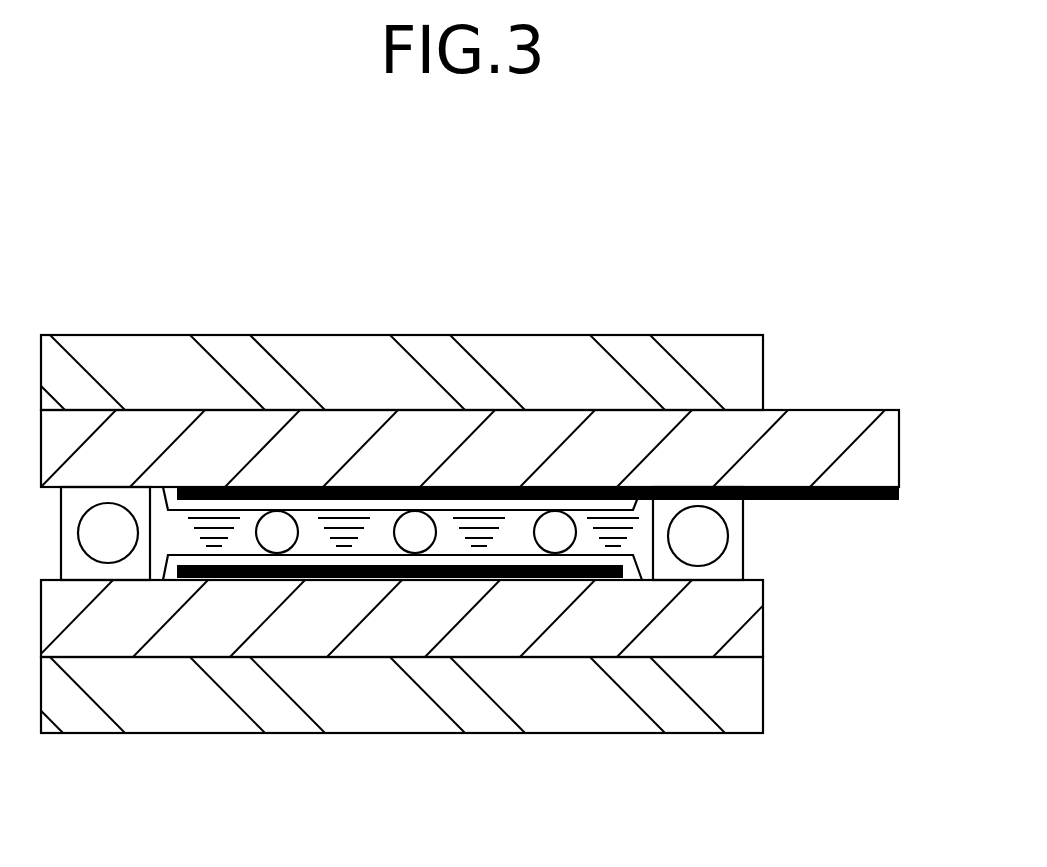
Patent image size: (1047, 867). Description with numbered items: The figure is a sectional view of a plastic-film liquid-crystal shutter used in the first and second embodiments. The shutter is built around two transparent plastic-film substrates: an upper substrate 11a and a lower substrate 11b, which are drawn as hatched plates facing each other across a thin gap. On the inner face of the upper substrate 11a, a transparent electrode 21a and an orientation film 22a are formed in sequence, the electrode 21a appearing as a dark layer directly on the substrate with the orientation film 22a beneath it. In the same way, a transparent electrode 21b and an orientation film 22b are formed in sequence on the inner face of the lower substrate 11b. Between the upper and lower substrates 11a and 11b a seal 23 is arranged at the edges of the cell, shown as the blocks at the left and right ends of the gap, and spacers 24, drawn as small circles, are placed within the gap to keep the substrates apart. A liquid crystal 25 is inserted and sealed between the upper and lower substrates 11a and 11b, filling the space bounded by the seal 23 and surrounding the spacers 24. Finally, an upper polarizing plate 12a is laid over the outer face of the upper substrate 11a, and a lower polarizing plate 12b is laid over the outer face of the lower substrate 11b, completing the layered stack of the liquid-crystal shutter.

The upper substrate 11a is at (900, 433).
The lower substrate 11b is at (750, 633).
The upper polarizing plate 12a is at (763, 367).
The lower polarizing plate 12b is at (743, 708).
The transparent electrode 21a is at (830, 501).
The transparent electrode 21b is at (565, 572).
The orientation film 22a is at (173, 497).
The orientation film 22b is at (172, 567).
The seal 23 is at (732, 512).
The spacers 24 is at (277, 537).
The liquid crystal 25 is at (452, 545).